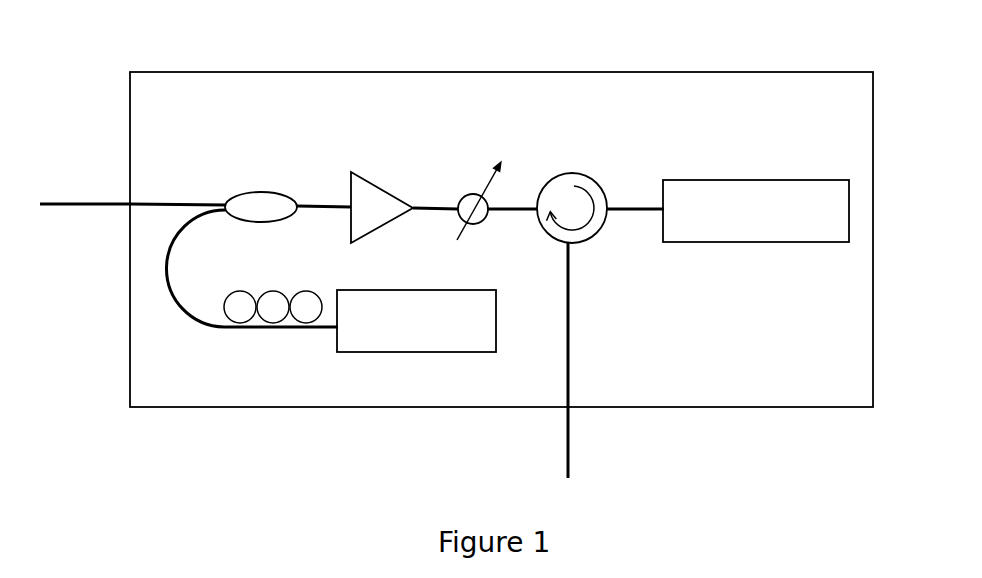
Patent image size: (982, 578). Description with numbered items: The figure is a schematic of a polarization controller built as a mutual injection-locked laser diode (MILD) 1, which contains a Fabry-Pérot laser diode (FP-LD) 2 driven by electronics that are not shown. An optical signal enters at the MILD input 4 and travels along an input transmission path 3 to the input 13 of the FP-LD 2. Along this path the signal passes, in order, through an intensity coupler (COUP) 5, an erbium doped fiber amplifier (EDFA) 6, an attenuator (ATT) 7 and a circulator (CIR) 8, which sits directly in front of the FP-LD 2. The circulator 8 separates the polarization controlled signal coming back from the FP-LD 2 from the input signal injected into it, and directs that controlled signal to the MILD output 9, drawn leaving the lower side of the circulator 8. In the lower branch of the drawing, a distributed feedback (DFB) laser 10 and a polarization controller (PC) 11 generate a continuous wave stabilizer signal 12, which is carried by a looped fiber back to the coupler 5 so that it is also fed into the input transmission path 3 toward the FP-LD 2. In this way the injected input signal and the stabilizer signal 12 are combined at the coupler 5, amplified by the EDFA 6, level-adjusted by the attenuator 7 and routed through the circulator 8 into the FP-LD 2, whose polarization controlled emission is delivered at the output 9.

The mutual injection-locked laser diode 1 is at (826, 77).
The Fabry-Pérot laser diode 2 is at (702, 180).
The input transmission path 3 is at (160, 201).
The MILD input 4 is at (72, 206).
The intensity coupler 5 is at (277, 200).
The erbium doped fiber amplifier 6 is at (363, 174).
The attenuator 7 is at (470, 195).
The circulator 8 is at (593, 176).
The MILD output 9 is at (565, 456).
The distributed feedback laser 10 is at (394, 352).
The polarization controller 11 is at (272, 308).
The continuous wave stabilizer signal 12 is at (180, 289).
The input of the FP-LD 13 is at (660, 215).